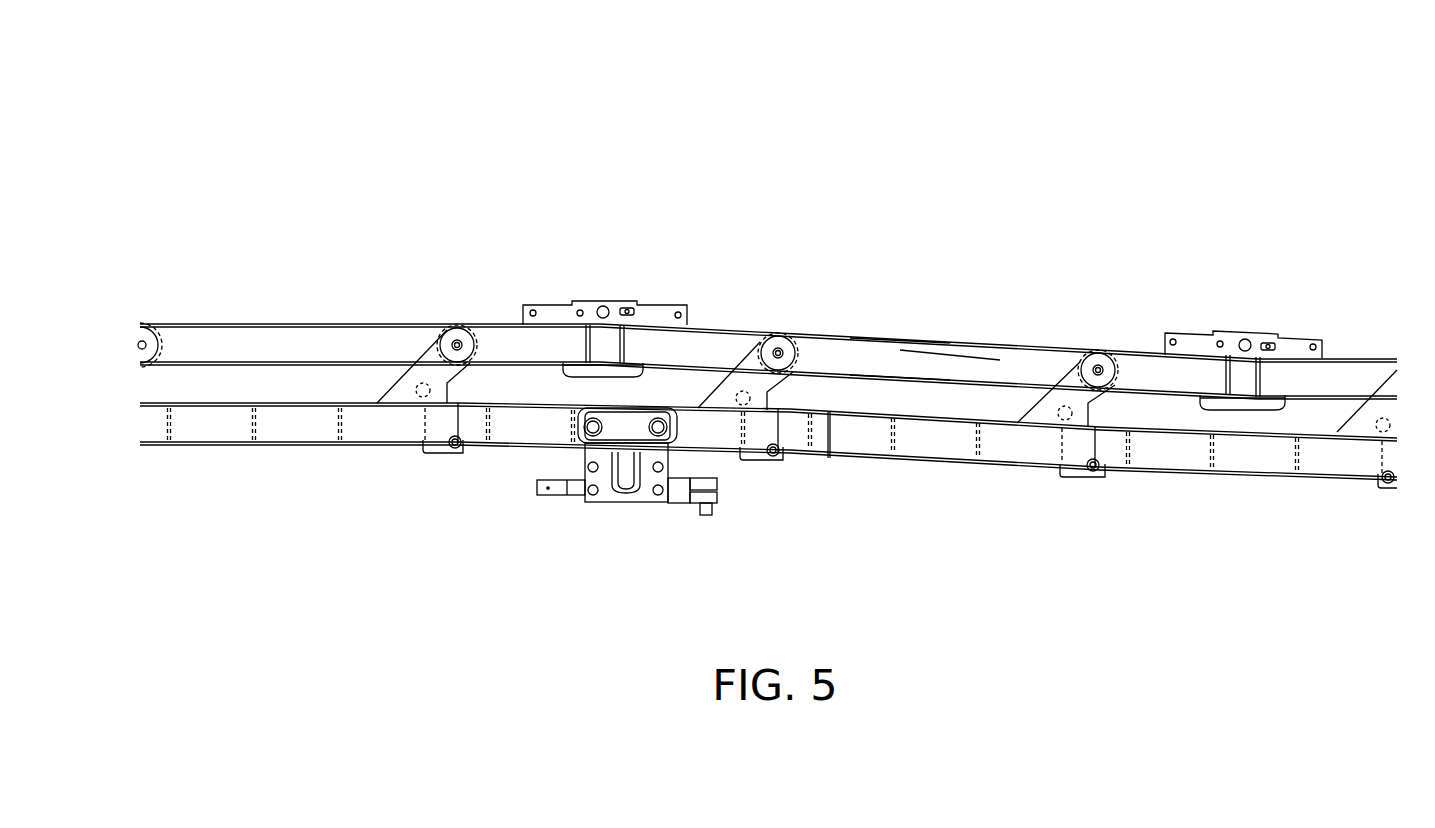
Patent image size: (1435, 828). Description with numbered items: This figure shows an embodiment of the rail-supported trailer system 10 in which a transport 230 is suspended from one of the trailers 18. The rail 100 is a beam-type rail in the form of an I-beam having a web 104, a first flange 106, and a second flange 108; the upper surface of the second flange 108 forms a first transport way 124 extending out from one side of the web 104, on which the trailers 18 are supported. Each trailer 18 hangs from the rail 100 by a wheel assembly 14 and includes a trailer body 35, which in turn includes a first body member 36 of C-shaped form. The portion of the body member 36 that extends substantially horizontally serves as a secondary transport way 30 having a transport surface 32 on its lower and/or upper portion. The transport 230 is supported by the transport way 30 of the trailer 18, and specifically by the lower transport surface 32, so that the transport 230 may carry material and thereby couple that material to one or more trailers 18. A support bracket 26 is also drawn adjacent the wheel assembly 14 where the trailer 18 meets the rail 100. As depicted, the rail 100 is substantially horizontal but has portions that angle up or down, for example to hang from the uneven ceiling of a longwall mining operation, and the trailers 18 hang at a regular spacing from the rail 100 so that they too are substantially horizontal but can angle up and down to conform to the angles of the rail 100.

The rail-supported trailer system 10 is at (1216, 133).
The wheel assembly 14 is at (457, 340).
The trailer 18 is at (300, 430).
The support bracket 26 is at (396, 390).
The transport way 30 is at (828, 456).
The transport surface 32 is at (690, 409).
The trailer body 35 is at (215, 430).
The first body member 36 is at (375, 430).
The rail 100 is at (836, 348).
The web 104 is at (955, 358).
The first flange 106 is at (900, 346).
The second flange 108 is at (918, 380).
The first transport way 124 is at (1040, 382).
The transport 230 is at (627, 498).